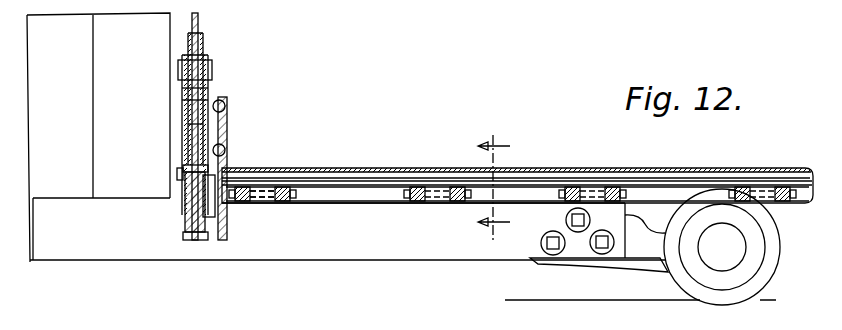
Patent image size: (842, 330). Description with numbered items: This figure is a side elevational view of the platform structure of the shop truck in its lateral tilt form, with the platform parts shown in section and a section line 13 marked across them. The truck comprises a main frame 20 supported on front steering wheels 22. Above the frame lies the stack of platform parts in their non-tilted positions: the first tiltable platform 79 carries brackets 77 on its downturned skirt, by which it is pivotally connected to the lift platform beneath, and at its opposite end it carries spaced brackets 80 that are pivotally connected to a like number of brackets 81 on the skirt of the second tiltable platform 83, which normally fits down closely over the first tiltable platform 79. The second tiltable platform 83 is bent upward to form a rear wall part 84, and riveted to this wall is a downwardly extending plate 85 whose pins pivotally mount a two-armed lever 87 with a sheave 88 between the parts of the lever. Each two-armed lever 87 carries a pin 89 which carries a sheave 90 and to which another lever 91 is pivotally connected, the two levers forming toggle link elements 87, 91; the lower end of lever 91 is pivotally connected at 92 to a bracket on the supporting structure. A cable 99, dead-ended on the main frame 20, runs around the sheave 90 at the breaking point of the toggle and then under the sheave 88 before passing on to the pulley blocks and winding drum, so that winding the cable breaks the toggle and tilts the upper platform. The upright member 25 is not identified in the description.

The section line 13- 13 is at (507, 185).
The main frame 20 is at (341, 256).
The front steering wheel 22 is at (685, 286).
The post 25 is at (147, 25).
The bracket 77 is at (416, 181).
The first tiltable platform 79 is at (366, 180).
The bracket 80 is at (274, 205).
The bracket 81 is at (265, 205).
The second tiltable platform 83 is at (305, 160).
The rear wall part 84 is at (228, 118).
The plate 85 is at (227, 232).
The two-armed lever 87 is at (192, 124).
The sheave 88 is at (190, 237).
The pin 89 is at (212, 70).
The sheave 90 is at (201, 41).
The lever 91 is at (185, 88).
The pivot 92 is at (180, 175).
The cable 99 is at (192, 94).